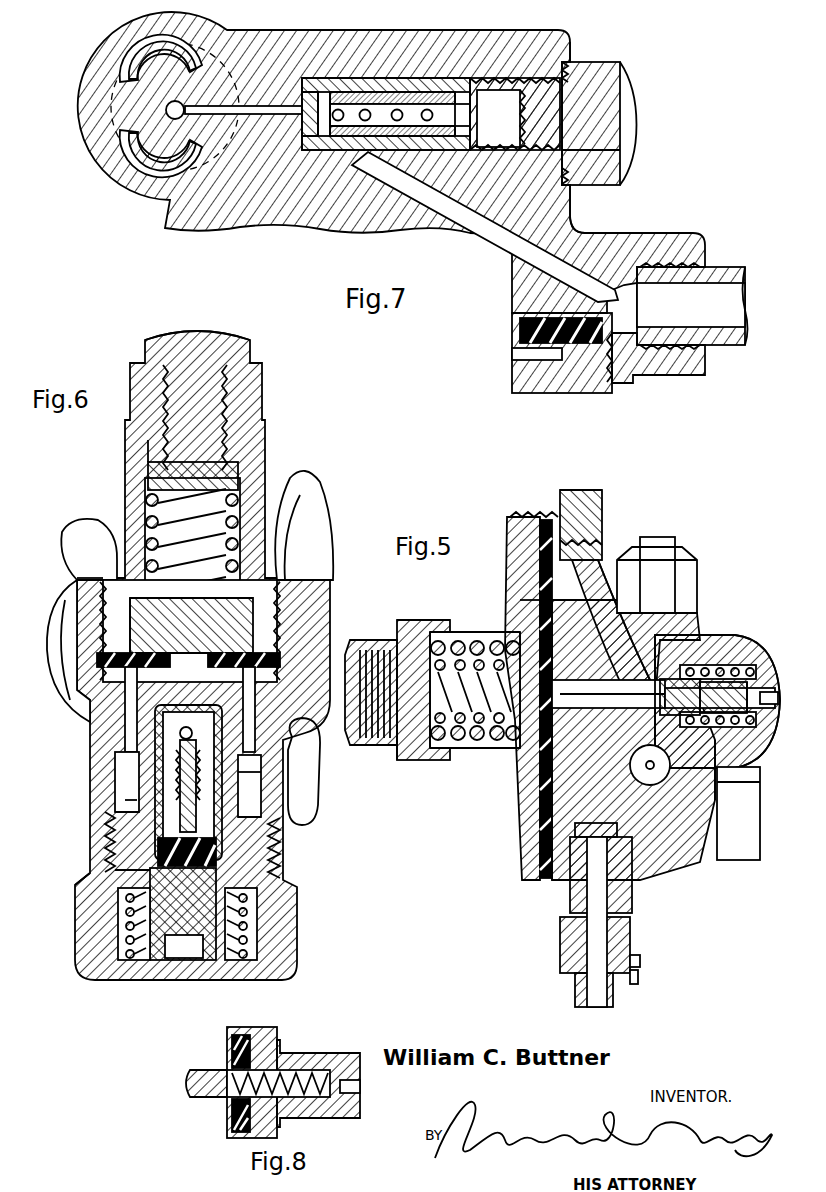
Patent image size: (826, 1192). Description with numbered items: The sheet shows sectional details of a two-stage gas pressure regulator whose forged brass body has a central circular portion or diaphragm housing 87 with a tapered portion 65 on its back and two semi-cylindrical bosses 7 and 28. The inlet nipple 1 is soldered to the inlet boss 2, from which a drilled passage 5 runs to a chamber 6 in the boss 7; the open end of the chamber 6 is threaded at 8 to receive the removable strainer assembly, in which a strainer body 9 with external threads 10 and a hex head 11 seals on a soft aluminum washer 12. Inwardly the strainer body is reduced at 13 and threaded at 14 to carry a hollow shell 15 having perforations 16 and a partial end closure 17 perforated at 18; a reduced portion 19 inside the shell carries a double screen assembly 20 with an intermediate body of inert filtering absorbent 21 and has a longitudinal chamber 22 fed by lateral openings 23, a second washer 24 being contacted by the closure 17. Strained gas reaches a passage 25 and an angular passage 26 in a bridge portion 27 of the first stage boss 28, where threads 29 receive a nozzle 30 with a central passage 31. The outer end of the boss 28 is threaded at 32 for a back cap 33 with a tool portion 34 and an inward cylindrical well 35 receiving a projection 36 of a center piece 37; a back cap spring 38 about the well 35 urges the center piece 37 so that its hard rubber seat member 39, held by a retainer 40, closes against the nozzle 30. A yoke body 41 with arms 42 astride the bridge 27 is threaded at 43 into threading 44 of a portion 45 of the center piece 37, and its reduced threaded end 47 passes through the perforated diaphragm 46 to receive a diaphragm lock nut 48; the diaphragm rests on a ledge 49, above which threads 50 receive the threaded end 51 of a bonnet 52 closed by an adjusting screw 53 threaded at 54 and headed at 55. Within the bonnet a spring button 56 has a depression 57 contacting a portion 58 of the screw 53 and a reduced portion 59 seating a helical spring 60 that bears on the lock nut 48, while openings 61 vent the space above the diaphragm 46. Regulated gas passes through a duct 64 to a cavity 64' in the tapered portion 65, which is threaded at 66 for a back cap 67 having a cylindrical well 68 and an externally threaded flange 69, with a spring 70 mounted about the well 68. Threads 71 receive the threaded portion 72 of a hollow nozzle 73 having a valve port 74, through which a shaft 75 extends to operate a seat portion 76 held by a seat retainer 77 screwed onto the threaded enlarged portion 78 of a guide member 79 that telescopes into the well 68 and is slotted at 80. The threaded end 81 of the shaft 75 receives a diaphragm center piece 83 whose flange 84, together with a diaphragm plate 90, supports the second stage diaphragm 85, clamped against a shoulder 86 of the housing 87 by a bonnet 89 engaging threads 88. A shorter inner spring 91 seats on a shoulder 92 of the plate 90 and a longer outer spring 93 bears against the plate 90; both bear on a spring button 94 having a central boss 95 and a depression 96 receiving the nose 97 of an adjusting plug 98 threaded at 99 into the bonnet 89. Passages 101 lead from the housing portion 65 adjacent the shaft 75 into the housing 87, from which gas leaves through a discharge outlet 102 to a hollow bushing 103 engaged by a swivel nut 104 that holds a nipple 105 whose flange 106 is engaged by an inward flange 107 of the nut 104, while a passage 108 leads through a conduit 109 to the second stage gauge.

In FIG. 7, the inlet connection or nipple 1 is at (742, 267).
In FIG. 7, the inlet boss 2 is at (690, 233).
In FIG. 7, the drilled passage 5 is at (512, 240).
In FIG. 5, the chamber 6 is at (665, 785).
In FIG. 7, the semi-cylindrical boss 7 is at (556, 22).
In FIG. 5, the semi-cylindrical boss 7 is at (665, 810).
In FIG. 7, the internal threads 8 is at (600, 92).
In FIG. 7, the strainer body 9 is at (625, 150).
In FIG. 7, the external threads 10 is at (572, 216).
In FIG. 7, the hex-shaped head 11 is at (620, 68).
In FIG. 7, the washer 12 is at (578, 185).
In FIG. 7, the reduced portion 13 is at (522, 92).
In FIG. 7, the external threads 14 is at (483, 100).
In FIG. 7, the hollow shell 15 is at (452, 95).
In FIG. 7, the perforations 16 is at (420, 95).
In FIG. 7, the partial end closure 17 is at (345, 112).
In FIG. 7, the perforation 18 is at (302, 130).
In FIG. 7, the reduced portion 19 is at (455, 170).
In FIG. 7, the double screen assembly 20 is at (398, 92).
In FIG. 7, the inert filtering absorbent 21 is at (330, 100).
In FIG. 7, the longitudinal chamber 22 is at (338, 130).
In FIG. 7, the lateral openings 23 is at (440, 128).
In FIG. 7, the second soft aluminum washer 24 is at (332, 128).
In FIG. 7, the passage 25 is at (268, 120).
In FIG. 7, the angularly disposed passage 26 is at (166, 110).
In FIG. 7, the bridge portion 27 is at (140, 95).
In FIG. 6, the bridge portion 27 is at (155, 738).
In FIG. 7, the boss 28 is at (130, 140).
In FIG. 6, the boss 28 is at (272, 845).
In FIG. 6, the internal threads 29 is at (240, 748).
In FIG. 6, the nozzle 30 is at (240, 775).
In FIG. 6, the central perforation or passage 31 is at (180, 795).
In FIG. 6, the internal threads 32 is at (158, 855).
In FIG. 6, the back cap 33 is at (110, 980).
In FIG. 6, the portion 34 is at (90, 900).
In FIG. 6, the cylindrical well 35 is at (150, 970).
In FIG. 6, the cylindrical projection 36 is at (215, 970).
In FIG. 6, the center piece 37 is at (128, 912).
In FIG. 6, the helical back cap spring 38 is at (160, 940).
In FIG. 6, the hard rubber valve seat member 39 is at (272, 862).
In FIG. 6, the retainer 40 is at (112, 835).
In FIG. 6, the yoke body 41 is at (85, 700).
In FIG. 6, the yoke arms or branches 42 is at (115, 762).
In FIG. 6, the external threads 43 is at (110, 850).
In FIG. 6, the internal threading 44 is at (115, 868).
In FIG. 6, the portion 45 is at (125, 812).
In FIG. 6, the perforated diaphragm 46 is at (97, 660).
In FIG. 6, the reduced threaded end 47 is at (145, 560).
In FIG. 6, the diaphragm lock nut 48 is at (135, 628).
In FIG. 6, the machined ledge or shoulder 49 is at (125, 690).
In FIG. 6, the internal threads 50 is at (100, 600).
In FIG. 6, the threaded end 51 is at (77, 575).
In FIG. 6, the bonnet 52 is at (255, 500).
In FIG. 6, the adjusting screw 53 is at (258, 425).
In FIG. 6, the threads 54 is at (255, 395).
In FIG. 6, the slotted or hex head 55 is at (145, 345).
In FIG. 6, the spring button 56 is at (245, 465).
In FIG. 6, the depression 57 is at (148, 490).
In FIG. 6, the shaped portion 58 is at (250, 440).
In FIG. 6, the central reduced portion 59 is at (262, 520).
In FIG. 6, the helical spring 60 is at (240, 545).
In FIG. 6, the openings 61 is at (95, 540).
In FIG. 5, the passage or duct 64 is at (608, 724).
In FIG. 5, the cavity 64' is at (657, 646).
In FIG. 5, the tapered portion 65 is at (680, 650).
In FIG. 5, the internal threads 66 is at (690, 665).
In FIG. 5, the back cap 67 is at (765, 650).
In FIG. 5, the cylindrical well 68 is at (740, 752).
In FIG. 5, the externally threaded flange 69 is at (720, 765).
In FIG. 5, the spring 70 is at (765, 650).
In FIG. 5, the internal threads 71 is at (590, 660).
In FIG. 5, the threaded portion 72 is at (657, 575).
In FIG. 5, the hollow nozzle 73 is at (630, 690).
In FIG. 5, the valve port 74 is at (650, 765).
In FIG. 5, the center piece or shaft 75 is at (590, 690).
In FIG. 8, the center piece or shaft 75 is at (200, 1097).
In FIG. 5, the seat portion 76 is at (740, 690).
In FIG. 8, the seat portion 76 is at (233, 1058).
In FIG. 5, the seat retainer 77 is at (715, 785).
In FIG. 8, the seat retainer 77 is at (260, 1030).
In FIG. 5, the threaded enlarged portion 78 is at (680, 600).
In FIG. 8, the threaded enlarged portion 78 is at (270, 1122).
In FIG. 5, the guide member 79 is at (730, 770).
In FIG. 8, the guide member 79 is at (362, 1040).
In FIG. 5, the slot 80 is at (750, 705).
In FIG. 8, the slot 80 is at (358, 1087).
In FIG. 5, the threaded end 81 is at (500, 755).
In FIG. 5, the diaphragm center piece 83 is at (520, 630).
In FIG. 5, the radially extending flange 84 is at (530, 760).
In FIG. 5, the diaphragm 85 is at (575, 515).
In FIG. 5, the shoulder 86 is at (575, 520).
In FIG. 5, the central circular portion or diaphragm housing 87 is at (600, 580).
In FIG. 7, the internal threads 88 is at (615, 380).
In FIG. 5, the internal threads 88 is at (535, 505).
In FIG. 7, the bonnet 89 is at (520, 393).
In FIG. 5, the bonnet 89 is at (512, 530).
In FIG. 5, the diaphragm plate 90 is at (520, 600).
In FIG. 5, the inner spring 91 is at (455, 750).
In FIG. 5, the shoulder 92 is at (505, 770).
In FIG. 5, the outer spring 93 is at (455, 760).
In FIG. 5, the spring button 94 is at (445, 745).
In FIG. 5, the central boss 95 is at (445, 640).
In FIG. 5, the depression 96 is at (437, 640).
In FIG. 5, the point or nose 97 is at (430, 620).
In FIG. 5, the adjusting plug 98 is at (395, 750).
In FIG. 5, the threads 99 is at (358, 690).
In FIG. 5, the ducts or passages 101 is at (600, 750).
In FIG. 5, the discharge outlet 102 is at (575, 865).
In FIG. 5, the hollow bushing 103 is at (570, 905).
In FIG. 5, the swivel nut 104 is at (562, 950).
In FIG. 5, the nipple 105 is at (578, 995).
In FIG. 5, the flange 106 is at (640, 966).
In FIG. 5, the inwardly extending flange 107 is at (638, 982).
In FIG. 5, the passage 108 is at (585, 570).
In FIG. 5, the pipe or conduit 109 is at (570, 510).